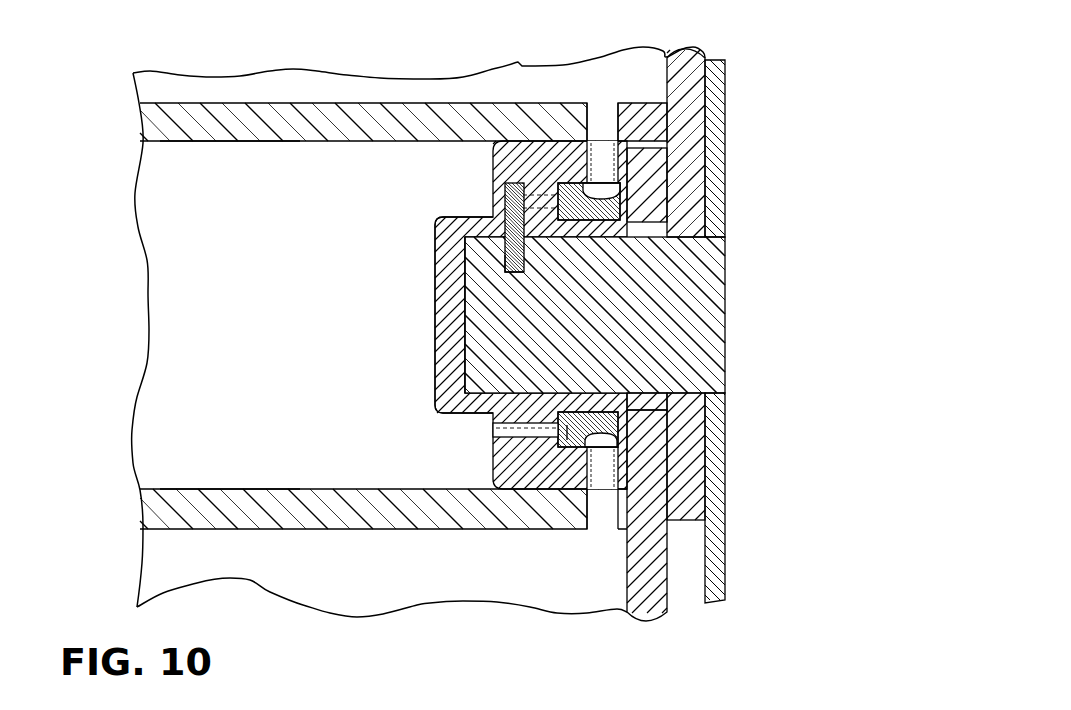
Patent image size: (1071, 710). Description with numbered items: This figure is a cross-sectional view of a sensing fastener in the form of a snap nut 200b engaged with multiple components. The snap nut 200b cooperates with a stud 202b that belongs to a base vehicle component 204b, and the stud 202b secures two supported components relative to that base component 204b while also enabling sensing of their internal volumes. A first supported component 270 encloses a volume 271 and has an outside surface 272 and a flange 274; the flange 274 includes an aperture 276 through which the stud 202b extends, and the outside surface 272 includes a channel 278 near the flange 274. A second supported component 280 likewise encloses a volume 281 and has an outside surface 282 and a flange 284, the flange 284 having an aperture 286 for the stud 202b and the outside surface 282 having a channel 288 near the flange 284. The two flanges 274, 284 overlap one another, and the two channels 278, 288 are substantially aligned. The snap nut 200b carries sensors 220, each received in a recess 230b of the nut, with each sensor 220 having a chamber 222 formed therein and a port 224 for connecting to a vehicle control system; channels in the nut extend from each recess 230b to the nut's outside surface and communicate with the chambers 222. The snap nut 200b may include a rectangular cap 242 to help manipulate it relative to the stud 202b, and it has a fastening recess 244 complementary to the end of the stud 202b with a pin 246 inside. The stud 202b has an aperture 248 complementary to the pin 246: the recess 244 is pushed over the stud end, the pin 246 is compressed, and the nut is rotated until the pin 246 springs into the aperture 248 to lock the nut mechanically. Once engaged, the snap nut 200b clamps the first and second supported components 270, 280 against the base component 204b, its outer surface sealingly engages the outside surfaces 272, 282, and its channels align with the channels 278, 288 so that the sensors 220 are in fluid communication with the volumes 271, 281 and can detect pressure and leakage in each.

The first supported component 270 is at (157, 120).
The volume 271 is at (305, 96).
The outside surface 272 is at (232, 141).
The flange 274 is at (683, 193).
The aperture 276 is at (685, 248).
The channel 278 is at (610, 120).
The second supported component 280 is at (157, 507).
The volume 281 is at (375, 601).
The outside surface 282 is at (225, 489).
The flange 284 is at (647, 508).
The aperture 286 is at (650, 403).
The channel 288 is at (612, 494).
The snap nut 200b is at (436, 234).
The stud 202b is at (653, 315).
The base vehicle component 204b is at (727, 567).
The sensor 220 is at (585, 185).
The chamber 222 is at (596, 183).
The port 224 is at (500, 428).
The recess 230b is at (570, 183).
The rectangular cap 242 is at (437, 399).
The recess 244 is at (500, 372).
The pin 246 is at (504, 236).
The aperture 248 is at (504, 276).